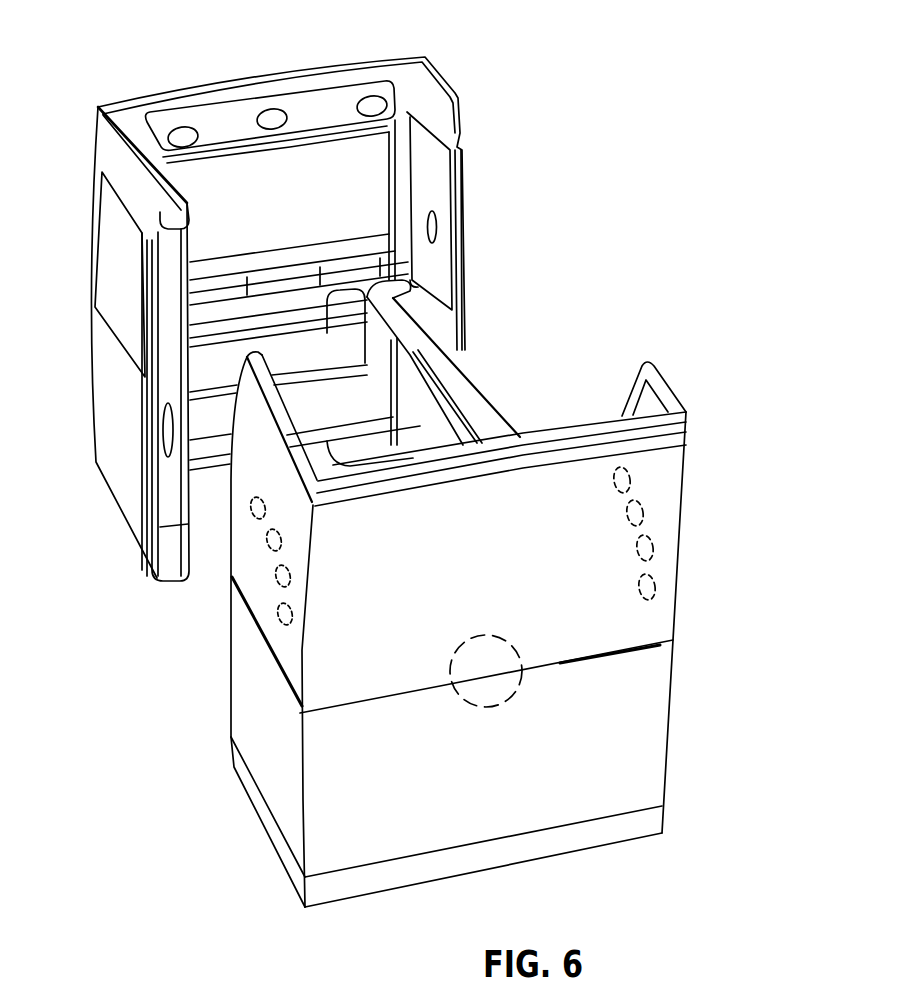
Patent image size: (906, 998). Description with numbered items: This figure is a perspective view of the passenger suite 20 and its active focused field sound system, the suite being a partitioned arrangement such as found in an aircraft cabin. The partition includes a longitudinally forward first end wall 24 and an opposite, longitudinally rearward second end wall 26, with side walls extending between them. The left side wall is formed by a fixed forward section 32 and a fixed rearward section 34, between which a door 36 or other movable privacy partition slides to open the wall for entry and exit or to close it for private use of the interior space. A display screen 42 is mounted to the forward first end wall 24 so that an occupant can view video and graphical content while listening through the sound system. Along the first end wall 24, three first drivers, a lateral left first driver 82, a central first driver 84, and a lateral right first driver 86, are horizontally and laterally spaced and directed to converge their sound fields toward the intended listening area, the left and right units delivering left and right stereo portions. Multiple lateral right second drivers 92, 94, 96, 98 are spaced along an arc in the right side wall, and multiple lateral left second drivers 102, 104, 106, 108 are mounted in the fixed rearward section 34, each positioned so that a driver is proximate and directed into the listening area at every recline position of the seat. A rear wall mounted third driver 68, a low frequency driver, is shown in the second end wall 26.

The passenger suite 20 is at (575, 265).
The first end wall 24 is at (307, 72).
The second end wall 26 is at (613, 698).
The fixed forward section 32 is at (130, 282).
The fixed rearward section 34 is at (270, 748).
The door 36 is at (178, 362).
The display screen 42 is at (277, 178).
The rear wall mounted third driver 68 is at (502, 708).
The first driver 82 is at (180, 127).
The central first driver 84 is at (265, 110).
The lateral right first driver 86 is at (367, 93).
The lateral right second driver 92 is at (632, 477).
The lateral right second driver 94 is at (647, 512).
The lateral right second driver 96 is at (657, 547).
The lateral right second driver 98 is at (660, 585).
The lateral left second driver 102 is at (252, 520).
The lateral left second driver 104 is at (268, 555).
The lateral left second driver 106 is at (273, 587).
The lateral left second driver 108 is at (278, 623).